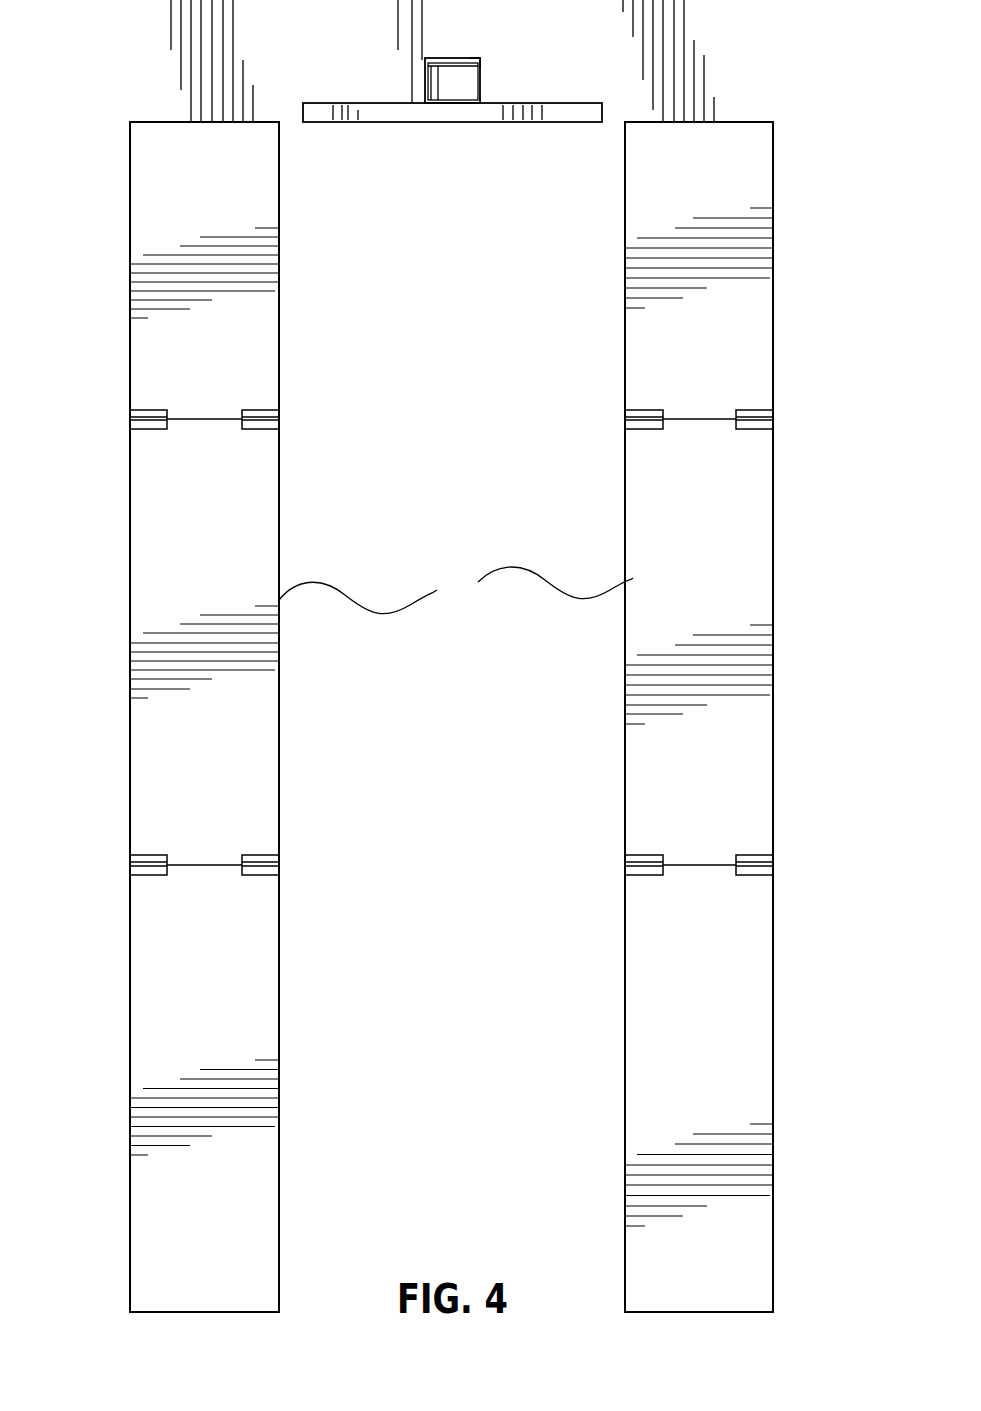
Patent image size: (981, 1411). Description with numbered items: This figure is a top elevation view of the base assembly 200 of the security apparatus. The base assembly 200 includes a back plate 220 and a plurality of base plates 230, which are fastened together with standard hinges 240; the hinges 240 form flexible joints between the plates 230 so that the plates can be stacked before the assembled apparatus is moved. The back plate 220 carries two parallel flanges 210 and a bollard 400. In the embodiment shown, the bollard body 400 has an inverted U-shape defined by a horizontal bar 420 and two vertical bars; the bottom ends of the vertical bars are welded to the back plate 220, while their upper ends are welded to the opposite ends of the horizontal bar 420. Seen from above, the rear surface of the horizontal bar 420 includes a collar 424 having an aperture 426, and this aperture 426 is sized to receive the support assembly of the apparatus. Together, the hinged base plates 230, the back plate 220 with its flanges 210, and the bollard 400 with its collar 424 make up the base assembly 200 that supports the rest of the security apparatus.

The base assembly 200 is at (120, 198).
The parallel flanges 210 is at (477, 67).
The back plate 220 is at (140, 17).
The base plates 230 is at (456, 590).
The standard hinges 240 is at (648, 855).
The bollard 400 is at (460, 147).
The horizontal bar 420 is at (438, 118).
The collar 424 is at (450, 131).
The aperture 426 is at (456, 86).